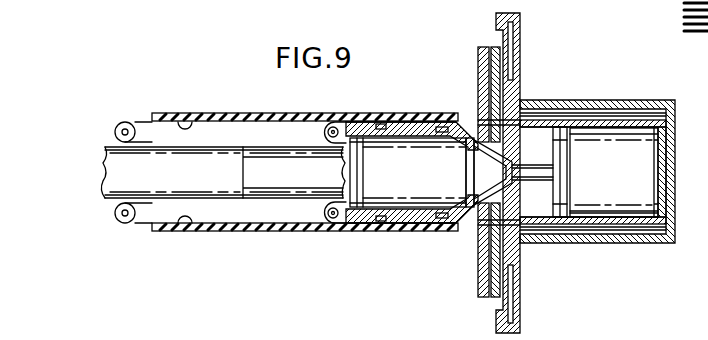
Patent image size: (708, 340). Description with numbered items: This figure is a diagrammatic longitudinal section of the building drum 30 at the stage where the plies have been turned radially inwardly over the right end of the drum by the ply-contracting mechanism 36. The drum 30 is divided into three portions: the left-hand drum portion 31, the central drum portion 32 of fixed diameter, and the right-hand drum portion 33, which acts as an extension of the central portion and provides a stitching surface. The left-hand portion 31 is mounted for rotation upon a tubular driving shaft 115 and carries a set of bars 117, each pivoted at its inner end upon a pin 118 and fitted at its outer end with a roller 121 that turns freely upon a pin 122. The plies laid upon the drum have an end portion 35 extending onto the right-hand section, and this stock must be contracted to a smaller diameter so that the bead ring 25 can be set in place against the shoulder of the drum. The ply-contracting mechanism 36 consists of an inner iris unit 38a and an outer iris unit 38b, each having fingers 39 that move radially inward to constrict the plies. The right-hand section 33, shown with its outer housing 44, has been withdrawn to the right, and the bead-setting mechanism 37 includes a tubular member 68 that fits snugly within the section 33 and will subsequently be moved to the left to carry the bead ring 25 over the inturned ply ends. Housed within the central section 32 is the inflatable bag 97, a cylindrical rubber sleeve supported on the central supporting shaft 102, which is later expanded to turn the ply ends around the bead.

The tubular driving shaft 115 is at (107, 154).
The roller 121 is at (123, 122).
The pin 122 is at (132, 121).
The bar 117 is at (233, 123).
The left-hand drum portion 31 is at (279, 106).
The pin 118 is at (331, 127).
The building drum 30 is at (393, 118).
The central drum portion 32 is at (445, 128).
The inflatable bag 97 is at (420, 198).
The fingers 39 is at (505, 124).
The inner iris unit 38a is at (476, 78).
The outer iris unit 38b is at (503, 82).
The ply-contracting mechanism 36 is at (522, 62).
The outer housing 44 is at (575, 100).
The right-hand drum portion 33 is at (632, 122).
The bead-setting mechanism 37 is at (652, 178).
The bead ring 25 is at (560, 150).
The end portion 35 is at (560, 164).
The central supporting shaft 102 is at (614, 172).
The tubular member 68 is at (626, 216).